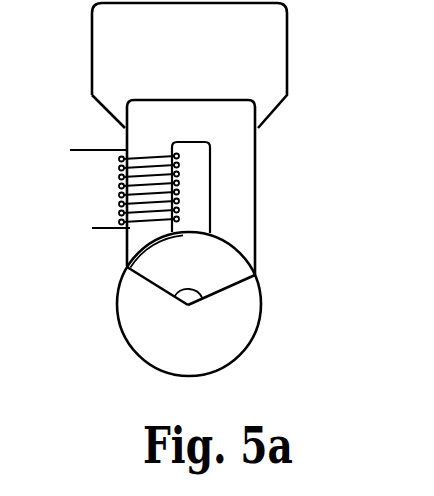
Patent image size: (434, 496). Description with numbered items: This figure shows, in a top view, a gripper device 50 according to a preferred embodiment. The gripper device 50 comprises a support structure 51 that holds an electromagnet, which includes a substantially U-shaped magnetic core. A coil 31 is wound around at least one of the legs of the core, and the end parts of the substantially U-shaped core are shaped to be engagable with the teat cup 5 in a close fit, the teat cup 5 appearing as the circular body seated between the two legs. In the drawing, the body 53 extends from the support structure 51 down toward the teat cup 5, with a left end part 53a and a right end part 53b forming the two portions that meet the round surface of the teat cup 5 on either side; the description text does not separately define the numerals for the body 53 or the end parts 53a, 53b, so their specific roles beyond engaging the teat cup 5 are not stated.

The teat cup 5 is at (260, 321).
The coil 31 is at (88, 150).
The gripper device 50 is at (312, 187).
The support structure 51 is at (288, 51).
The holder body 53 is at (256, 119).
The left jaw portion 53a is at (123, 248).
The right jaw portion 53b is at (256, 245).